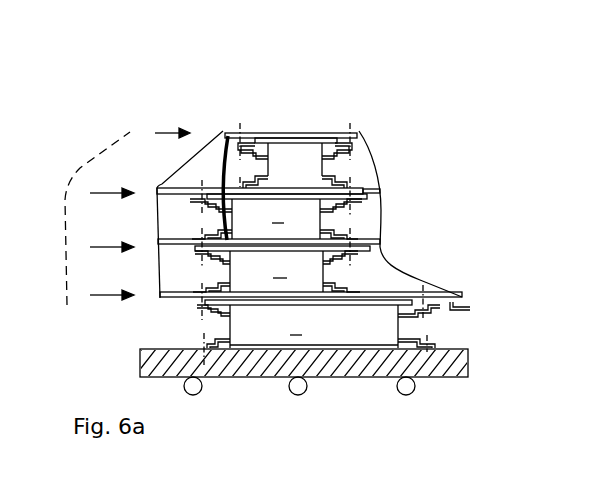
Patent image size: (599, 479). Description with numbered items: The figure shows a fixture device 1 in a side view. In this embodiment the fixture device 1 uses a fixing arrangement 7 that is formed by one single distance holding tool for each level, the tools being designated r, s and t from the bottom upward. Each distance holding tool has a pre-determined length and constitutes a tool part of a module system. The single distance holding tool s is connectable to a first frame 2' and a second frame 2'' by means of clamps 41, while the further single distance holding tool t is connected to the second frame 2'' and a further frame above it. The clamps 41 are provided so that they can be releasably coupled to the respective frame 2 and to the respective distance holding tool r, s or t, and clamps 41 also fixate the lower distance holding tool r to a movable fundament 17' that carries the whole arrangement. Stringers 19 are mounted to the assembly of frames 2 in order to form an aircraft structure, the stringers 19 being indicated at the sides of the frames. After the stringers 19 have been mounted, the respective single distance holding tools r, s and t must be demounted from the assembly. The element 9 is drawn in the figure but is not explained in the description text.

The fixture device 1 is at (405, 193).
The frame 2 is at (181, 165).
The first frame 2' is at (460, 322).
The second frame 2'' is at (182, 271).
The fixing arrangement 7 is at (368, 218).
The mounting foot 9 is at (220, 336).
The movable fundament 17' is at (324, 372).
The stringers 19 is at (120, 147).
The clamps 41 is at (337, 176).